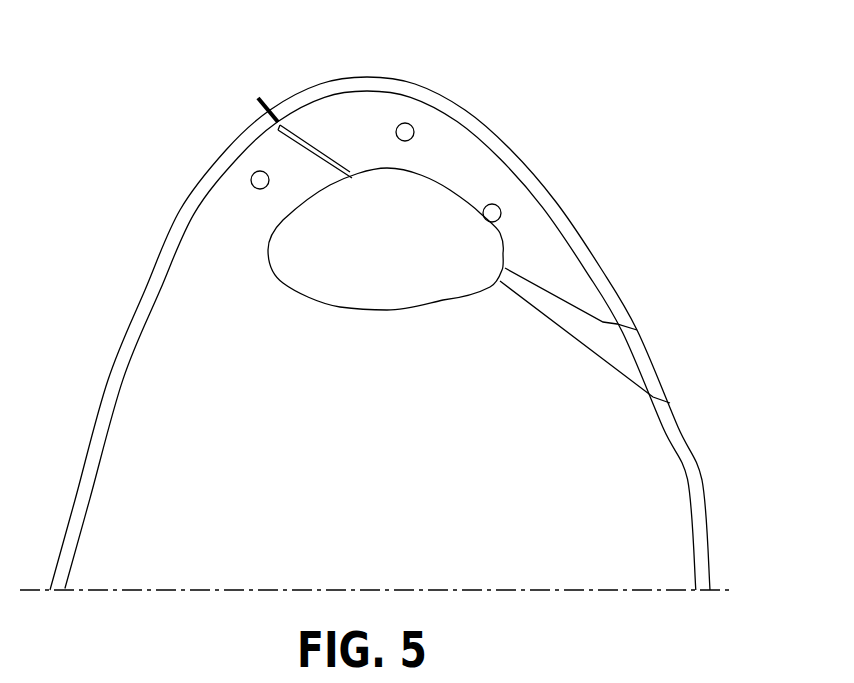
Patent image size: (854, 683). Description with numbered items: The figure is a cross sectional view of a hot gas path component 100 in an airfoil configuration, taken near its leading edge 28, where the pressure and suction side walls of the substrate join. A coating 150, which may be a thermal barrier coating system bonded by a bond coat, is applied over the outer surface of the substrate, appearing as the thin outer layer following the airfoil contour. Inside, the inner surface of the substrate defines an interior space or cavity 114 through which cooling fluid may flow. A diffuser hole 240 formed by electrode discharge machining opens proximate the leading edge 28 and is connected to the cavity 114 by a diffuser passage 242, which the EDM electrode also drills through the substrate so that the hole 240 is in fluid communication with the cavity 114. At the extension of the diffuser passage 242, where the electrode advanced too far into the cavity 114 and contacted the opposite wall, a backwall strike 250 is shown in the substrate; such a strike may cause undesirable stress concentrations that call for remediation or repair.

The hot gas path component 100 is at (703, 78).
The leading edge 28 is at (523, 76).
The coating 150 is at (690, 483).
The interior space or cavity 114 is at (408, 256).
The backwall strike 250 is at (262, 104).
The diffuser passage 242 is at (547, 273).
The diffuser hole 240 is at (628, 350).